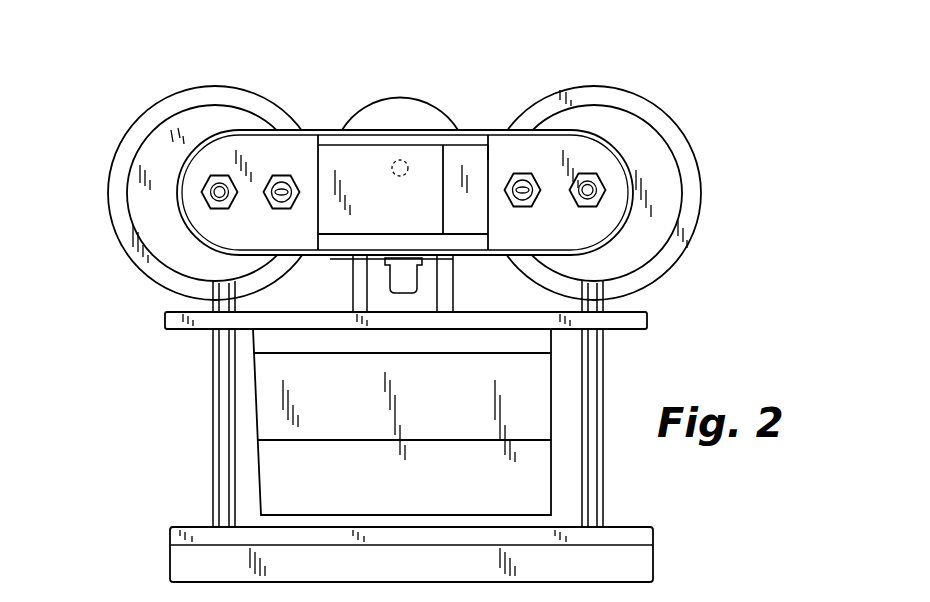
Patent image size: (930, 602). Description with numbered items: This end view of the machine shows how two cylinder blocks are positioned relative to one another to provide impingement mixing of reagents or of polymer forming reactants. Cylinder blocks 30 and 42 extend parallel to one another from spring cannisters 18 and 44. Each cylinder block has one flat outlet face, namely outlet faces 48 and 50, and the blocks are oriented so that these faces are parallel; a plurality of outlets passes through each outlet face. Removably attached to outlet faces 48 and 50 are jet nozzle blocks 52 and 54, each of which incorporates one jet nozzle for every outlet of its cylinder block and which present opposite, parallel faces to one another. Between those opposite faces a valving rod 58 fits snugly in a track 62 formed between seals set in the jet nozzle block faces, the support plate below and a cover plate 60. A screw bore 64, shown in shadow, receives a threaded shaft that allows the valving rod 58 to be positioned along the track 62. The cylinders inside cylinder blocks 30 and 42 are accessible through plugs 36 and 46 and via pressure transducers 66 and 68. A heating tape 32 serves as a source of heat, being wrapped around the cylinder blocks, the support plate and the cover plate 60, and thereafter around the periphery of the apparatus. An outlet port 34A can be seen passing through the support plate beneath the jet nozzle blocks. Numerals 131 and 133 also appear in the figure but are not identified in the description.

The spring cannister 18 is at (170, 138).
The heating tape 32 is at (177, 168).
The plug 36 is at (212, 198).
The cylinder block 30 is at (223, 235).
The outlet face 48 is at (317, 153).
The jet nozzle block 52 is at (330, 155).
The clamp wall 131 is at (362, 160).
The cover plate 60 is at (400, 140).
The clamp wall 133 is at (438, 158).
The jet nozzle block 54 is at (463, 162).
The outlet face 50 is at (493, 157).
The valving rod 58 is at (430, 187).
The screw bore 64 is at (392, 170).
The track 62 is at (363, 236).
The pressure transducer 66 is at (278, 208).
The pressure transducer 68 is at (524, 207).
The plug 46 is at (607, 195).
The spring cannister 44 is at (623, 122).
The cylinder block 42 is at (592, 222).
The outlet port 34A is at (410, 292).